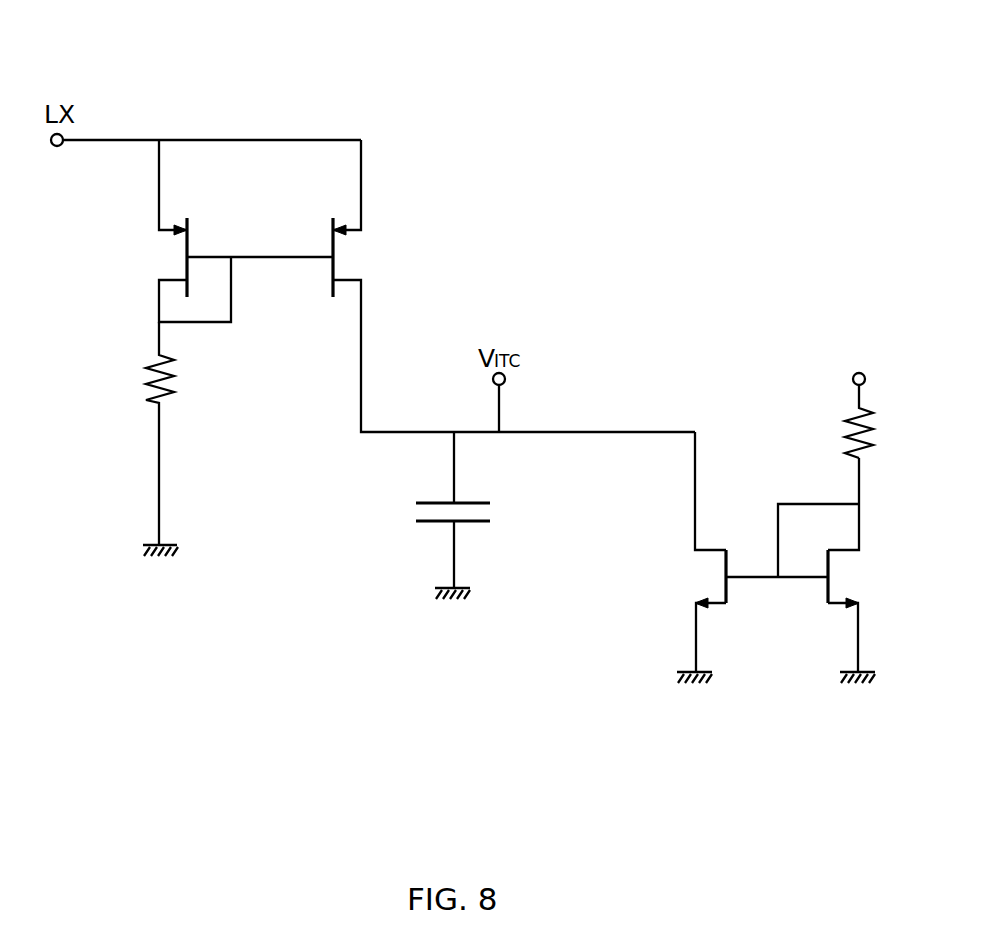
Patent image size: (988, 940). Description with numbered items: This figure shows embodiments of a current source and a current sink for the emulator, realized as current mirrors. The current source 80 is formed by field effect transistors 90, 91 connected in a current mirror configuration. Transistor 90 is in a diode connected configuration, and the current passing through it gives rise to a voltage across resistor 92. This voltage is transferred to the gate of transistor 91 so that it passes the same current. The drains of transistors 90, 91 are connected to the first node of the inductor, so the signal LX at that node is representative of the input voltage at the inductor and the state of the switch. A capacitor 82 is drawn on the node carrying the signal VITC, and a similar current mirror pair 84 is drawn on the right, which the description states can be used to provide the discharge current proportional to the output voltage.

The current source 80 is at (257, 740).
The capacitor 82 is at (490, 513).
The output current mirror 84 is at (858, 740).
The field effect transistor 90 is at (158, 260).
The field effect transistor 91 is at (360, 258).
The resistor 92 is at (135, 378).